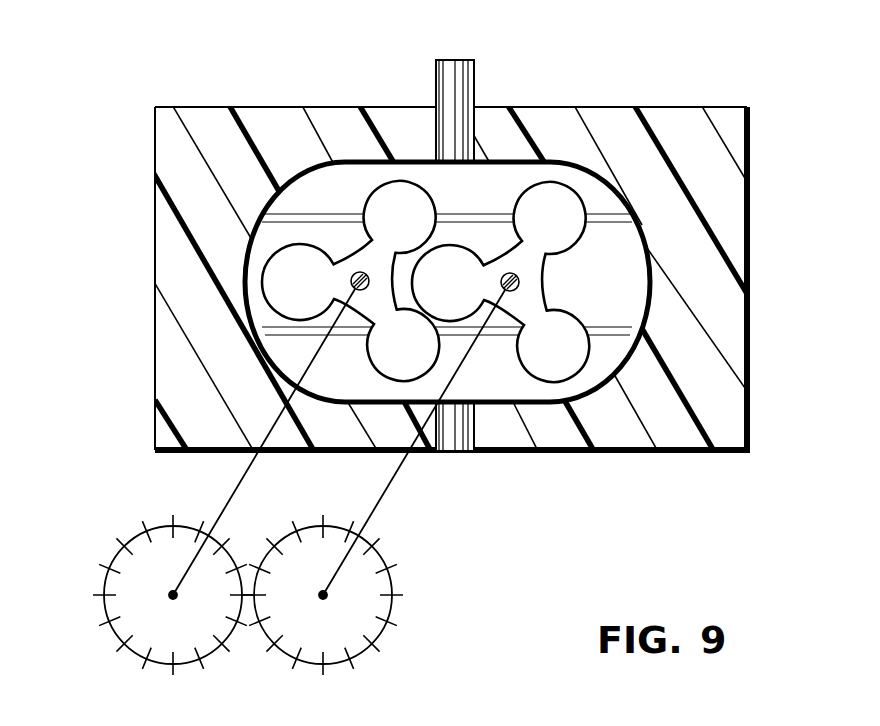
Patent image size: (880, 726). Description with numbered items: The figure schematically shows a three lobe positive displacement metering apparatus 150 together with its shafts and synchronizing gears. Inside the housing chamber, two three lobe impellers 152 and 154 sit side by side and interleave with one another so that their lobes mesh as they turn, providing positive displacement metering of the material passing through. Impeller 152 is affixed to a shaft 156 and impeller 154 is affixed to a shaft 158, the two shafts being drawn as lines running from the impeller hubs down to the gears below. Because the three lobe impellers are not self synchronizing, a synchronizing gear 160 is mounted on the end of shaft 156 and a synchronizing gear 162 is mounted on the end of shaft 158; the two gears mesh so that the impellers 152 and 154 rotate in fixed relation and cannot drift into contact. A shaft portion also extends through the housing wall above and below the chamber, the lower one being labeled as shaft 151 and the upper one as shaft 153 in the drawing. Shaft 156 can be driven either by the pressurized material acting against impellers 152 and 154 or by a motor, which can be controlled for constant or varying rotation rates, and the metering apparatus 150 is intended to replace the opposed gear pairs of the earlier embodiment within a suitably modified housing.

The three lobe positive displacement metering apparatus 150 is at (489, 107).
The lower shaft 151 is at (463, 453).
The three lobe impeller 152 is at (390, 218).
The upper shaft 153 is at (434, 78).
The three lobe impeller 154 is at (540, 214).
The shaft 156 is at (236, 492).
The shaft 158 is at (383, 495).
The synchronizing gear 160 is at (137, 593).
The synchronizing gear 162 is at (380, 607).